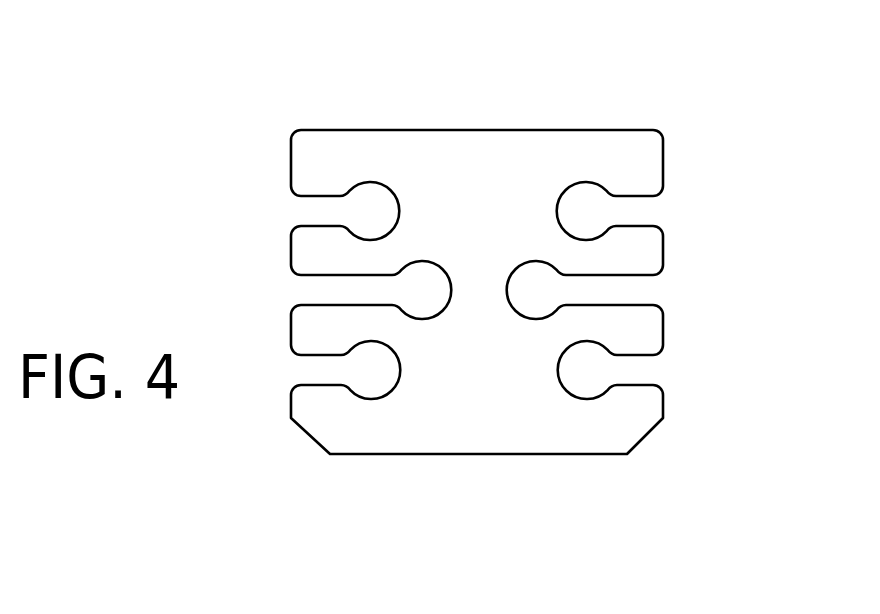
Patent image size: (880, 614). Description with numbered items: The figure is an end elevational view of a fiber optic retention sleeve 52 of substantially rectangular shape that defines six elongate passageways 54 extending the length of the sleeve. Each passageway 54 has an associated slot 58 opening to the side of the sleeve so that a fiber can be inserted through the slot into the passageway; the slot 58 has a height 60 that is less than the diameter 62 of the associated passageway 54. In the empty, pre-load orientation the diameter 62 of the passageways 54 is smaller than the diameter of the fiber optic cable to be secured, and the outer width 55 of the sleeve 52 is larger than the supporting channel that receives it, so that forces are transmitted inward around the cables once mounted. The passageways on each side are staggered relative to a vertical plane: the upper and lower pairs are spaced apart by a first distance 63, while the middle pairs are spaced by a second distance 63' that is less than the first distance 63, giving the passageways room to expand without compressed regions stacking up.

The sleeve 52 is at (745, 96).
The passageways 54 is at (380, 207).
The width of the sleeve 55 is at (662, 120).
The slot 58 is at (306, 211).
The height 60 is at (665, 305).
The diameter 62 is at (383, 237).
The first distance 63 is at (479, 460).
The second distance 63' is at (479, 425).